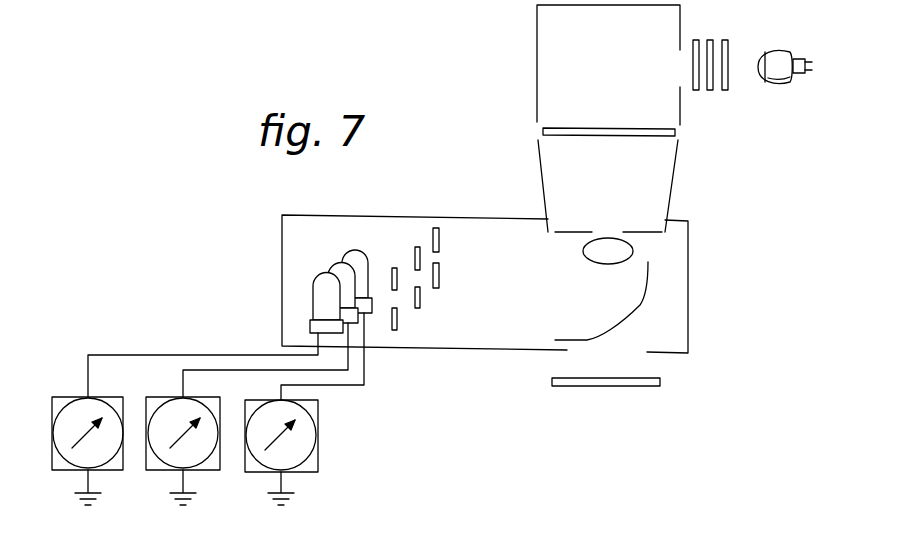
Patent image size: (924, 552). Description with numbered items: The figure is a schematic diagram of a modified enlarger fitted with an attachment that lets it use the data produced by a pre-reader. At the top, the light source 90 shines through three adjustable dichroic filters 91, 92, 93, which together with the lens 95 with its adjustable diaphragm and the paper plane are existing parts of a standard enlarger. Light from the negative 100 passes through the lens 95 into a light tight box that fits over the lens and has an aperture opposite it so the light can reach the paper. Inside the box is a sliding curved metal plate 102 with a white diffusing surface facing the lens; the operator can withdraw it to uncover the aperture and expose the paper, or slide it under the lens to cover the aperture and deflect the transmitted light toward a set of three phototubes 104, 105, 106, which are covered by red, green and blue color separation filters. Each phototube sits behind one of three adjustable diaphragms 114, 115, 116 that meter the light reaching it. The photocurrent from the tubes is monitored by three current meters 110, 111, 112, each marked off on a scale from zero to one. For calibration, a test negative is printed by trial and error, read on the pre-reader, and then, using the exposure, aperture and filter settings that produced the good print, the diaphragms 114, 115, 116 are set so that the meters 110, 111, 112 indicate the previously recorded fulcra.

The light source 90 is at (790, 50).
The adjustable dichroic filter 91 is at (696, 40).
The adjustable dichroic filter 92 is at (710, 40).
The adjustable dichroic filter 93 is at (725, 40).
The lens 95 is at (633, 251).
The negative 100 is at (668, 137).
The sliding curved metal plate 102 is at (640, 303).
The phototube 104 is at (358, 252).
The phototube 105 is at (337, 268).
The phototube 106 is at (315, 280).
The current meter 110 is at (313, 472).
The current meter 111 is at (216, 470).
The current meter 112 is at (120, 470).
The adjustable diaphragm 114 is at (440, 240).
The adjustable diaphragm 115 is at (420, 305).
The adjustable diaphragm 116 is at (398, 326).